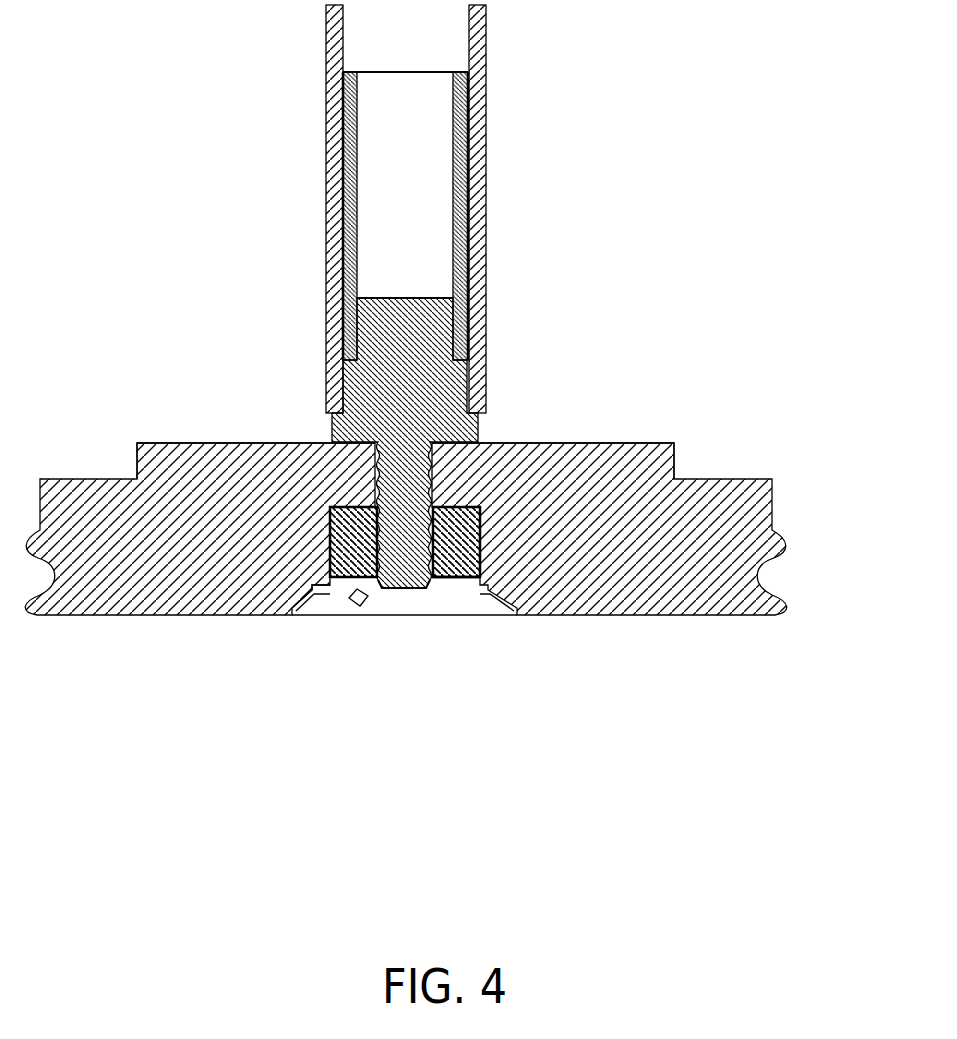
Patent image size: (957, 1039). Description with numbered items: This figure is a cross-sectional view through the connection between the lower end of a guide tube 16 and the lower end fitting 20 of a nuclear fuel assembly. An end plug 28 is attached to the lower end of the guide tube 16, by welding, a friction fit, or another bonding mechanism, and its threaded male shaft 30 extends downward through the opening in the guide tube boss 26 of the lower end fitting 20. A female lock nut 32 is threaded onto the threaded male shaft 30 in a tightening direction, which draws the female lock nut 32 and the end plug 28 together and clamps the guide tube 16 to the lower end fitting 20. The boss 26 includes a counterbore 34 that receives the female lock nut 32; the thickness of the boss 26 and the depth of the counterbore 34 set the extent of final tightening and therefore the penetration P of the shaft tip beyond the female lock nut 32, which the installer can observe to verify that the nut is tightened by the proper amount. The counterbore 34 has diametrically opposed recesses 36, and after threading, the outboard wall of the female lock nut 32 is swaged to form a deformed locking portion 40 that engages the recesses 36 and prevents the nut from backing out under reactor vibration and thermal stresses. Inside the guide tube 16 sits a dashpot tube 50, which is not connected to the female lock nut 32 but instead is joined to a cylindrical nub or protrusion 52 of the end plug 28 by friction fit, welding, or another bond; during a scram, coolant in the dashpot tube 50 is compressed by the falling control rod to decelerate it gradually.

The guide tube 16 is at (487, 194).
The dashpot tube 50 is at (458, 237).
The cylindrical nub or protrusion 52 is at (438, 297).
The end plug 28 is at (419, 394).
The guide tube boss 26 is at (600, 442).
The lower end fitting 20 is at (716, 478).
The threaded male shaft 30 is at (409, 588).
The female lock nut 32 is at (447, 588).
The counterbore 34 is at (483, 527).
The recesses 36 is at (303, 595).
The deformed locking portion 40 is at (323, 602).
The penetration P is at (351, 606).